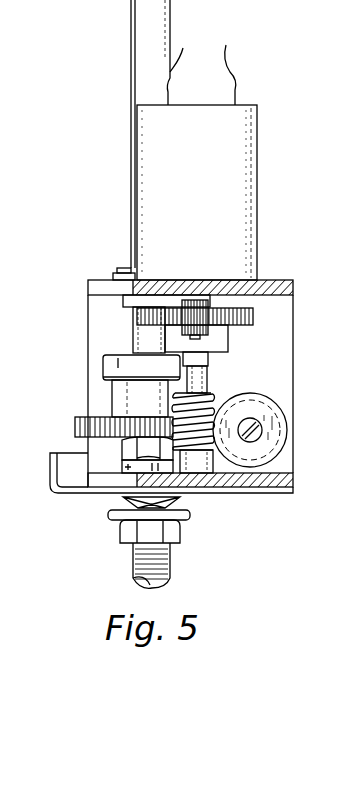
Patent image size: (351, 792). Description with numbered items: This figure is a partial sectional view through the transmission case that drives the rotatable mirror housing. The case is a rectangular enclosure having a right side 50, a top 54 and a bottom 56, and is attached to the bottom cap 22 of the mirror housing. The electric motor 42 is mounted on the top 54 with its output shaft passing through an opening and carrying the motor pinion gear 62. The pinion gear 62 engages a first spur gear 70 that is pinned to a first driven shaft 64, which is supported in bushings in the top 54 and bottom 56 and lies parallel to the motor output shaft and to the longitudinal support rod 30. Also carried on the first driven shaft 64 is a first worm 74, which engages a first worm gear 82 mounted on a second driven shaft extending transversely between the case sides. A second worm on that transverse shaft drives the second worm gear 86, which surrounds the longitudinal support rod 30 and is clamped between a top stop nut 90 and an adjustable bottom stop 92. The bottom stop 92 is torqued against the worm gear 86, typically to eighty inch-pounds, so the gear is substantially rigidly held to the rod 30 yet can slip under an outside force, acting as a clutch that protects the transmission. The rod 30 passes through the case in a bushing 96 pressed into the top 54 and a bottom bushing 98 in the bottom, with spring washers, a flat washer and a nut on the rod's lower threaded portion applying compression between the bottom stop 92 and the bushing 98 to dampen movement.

The bottom cap 22 is at (73, 497).
The longitudinal support rod 30 is at (131, 52).
The electric motor 42 is at (180, 188).
The right side 50 is at (205, 358).
The top 54 is at (268, 281).
The bottom 56 is at (247, 496).
The motor pinion gear 62 is at (160, 339).
The first driven shaft 64 is at (212, 364).
The first spur gear 70 is at (253, 313).
The first worm 74 is at (268, 394).
The first worm gear 82 is at (272, 458).
The second worm gear 86 is at (75, 421).
The top stop nut 90 is at (113, 367).
The adjustable bottom stop 92 is at (125, 448).
The bushing 96 is at (122, 270).
The bottom bushing 98 is at (123, 467).